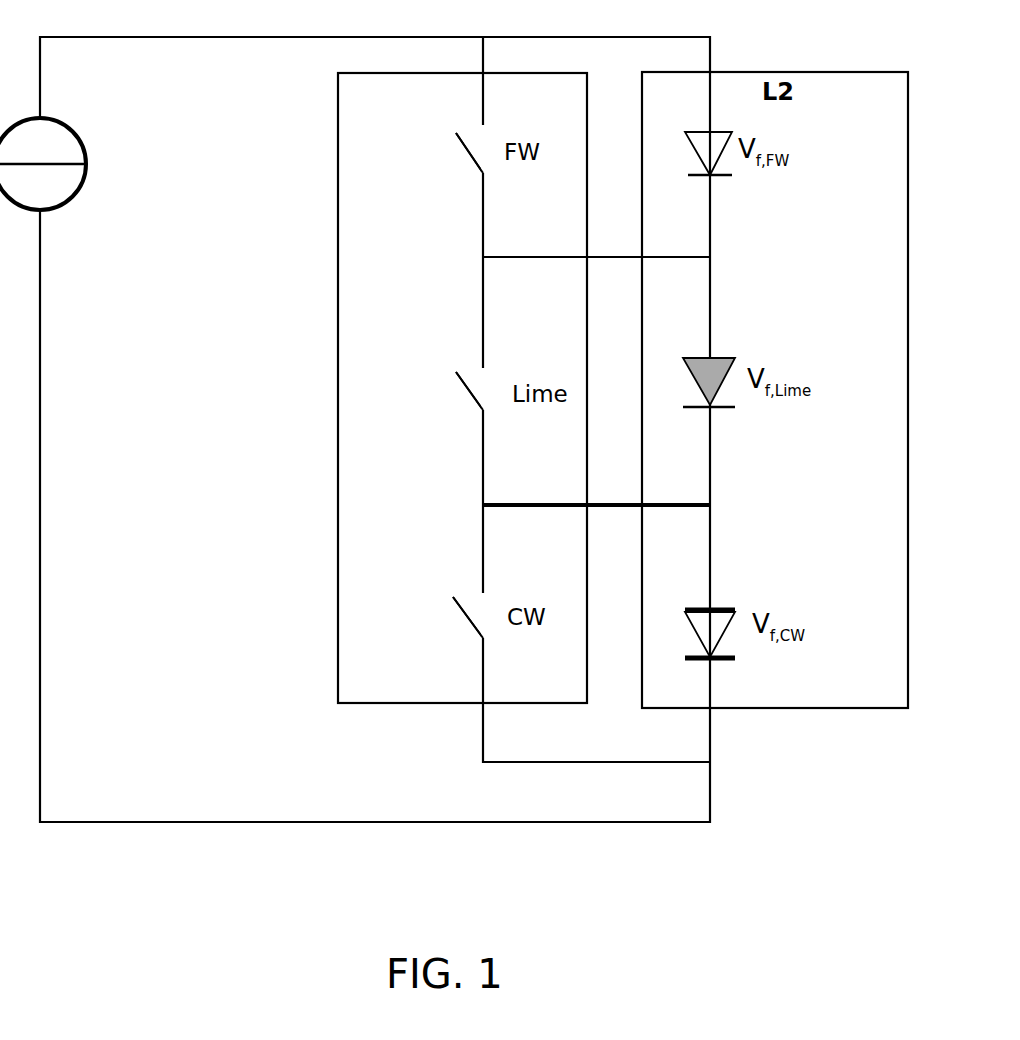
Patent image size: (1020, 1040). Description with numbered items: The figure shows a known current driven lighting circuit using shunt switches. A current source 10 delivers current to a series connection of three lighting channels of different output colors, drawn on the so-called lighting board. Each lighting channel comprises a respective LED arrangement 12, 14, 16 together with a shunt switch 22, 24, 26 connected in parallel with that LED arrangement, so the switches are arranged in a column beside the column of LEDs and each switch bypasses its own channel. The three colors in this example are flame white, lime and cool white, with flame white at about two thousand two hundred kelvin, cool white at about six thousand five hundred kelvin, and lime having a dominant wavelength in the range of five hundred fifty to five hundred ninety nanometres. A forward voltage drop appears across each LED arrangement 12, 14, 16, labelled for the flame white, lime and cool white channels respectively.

The current source 10 is at (88, 166).
The LED arrangement 12 is at (718, 180).
The LED arrangement 14 is at (730, 408).
The LED arrangement 16 is at (728, 608).
The shunt switch 22 is at (462, 150).
The shunt switch 24 is at (458, 388).
The shunt switch 26 is at (462, 628).